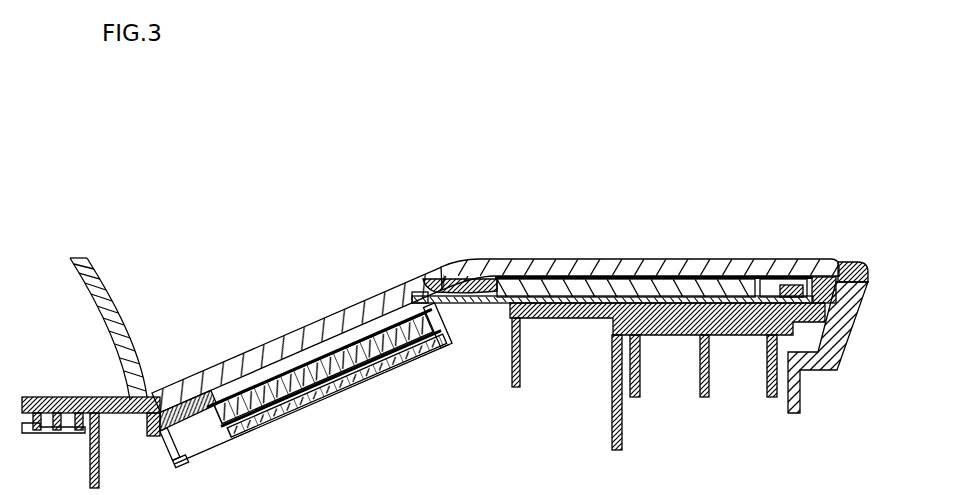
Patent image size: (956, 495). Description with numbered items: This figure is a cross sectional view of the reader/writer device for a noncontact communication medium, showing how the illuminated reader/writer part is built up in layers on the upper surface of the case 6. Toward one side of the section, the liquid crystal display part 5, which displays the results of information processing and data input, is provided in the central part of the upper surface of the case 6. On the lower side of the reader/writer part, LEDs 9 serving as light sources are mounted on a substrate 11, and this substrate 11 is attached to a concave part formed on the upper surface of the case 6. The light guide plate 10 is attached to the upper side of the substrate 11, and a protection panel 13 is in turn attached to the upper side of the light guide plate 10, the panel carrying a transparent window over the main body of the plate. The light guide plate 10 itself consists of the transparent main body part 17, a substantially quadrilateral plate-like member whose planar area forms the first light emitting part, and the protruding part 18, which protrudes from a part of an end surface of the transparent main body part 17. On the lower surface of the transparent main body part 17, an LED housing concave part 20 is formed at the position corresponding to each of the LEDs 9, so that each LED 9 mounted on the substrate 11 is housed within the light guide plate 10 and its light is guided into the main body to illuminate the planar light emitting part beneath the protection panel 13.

The liquid crystal display part 5 is at (310, 365).
The case 6 is at (847, 350).
The LED 9 is at (781, 283).
The light guide plate 10 is at (643, 262).
The substrate 11 is at (700, 283).
The protection panel 13 is at (833, 262).
The transparent main body part 17 is at (591, 282).
The protruding part 18 is at (444, 278).
The LED housing concave part 20 is at (753, 270).